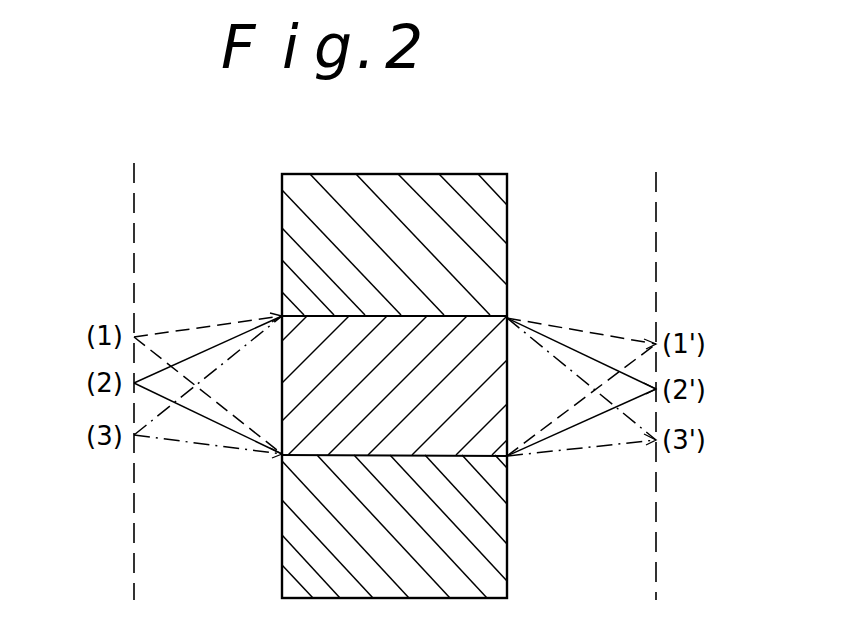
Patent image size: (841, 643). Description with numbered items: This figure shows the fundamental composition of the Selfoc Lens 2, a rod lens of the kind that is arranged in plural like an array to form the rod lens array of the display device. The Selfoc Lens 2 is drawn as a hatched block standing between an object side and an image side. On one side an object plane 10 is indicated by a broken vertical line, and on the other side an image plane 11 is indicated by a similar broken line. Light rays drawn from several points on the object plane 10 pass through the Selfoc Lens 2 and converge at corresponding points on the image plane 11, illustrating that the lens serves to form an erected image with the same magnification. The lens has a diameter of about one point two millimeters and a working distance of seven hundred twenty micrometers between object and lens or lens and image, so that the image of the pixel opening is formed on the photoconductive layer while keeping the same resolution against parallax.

The Selfoc Lens 2 is at (388, 172).
The object plane 10 is at (133, 163).
The image plane 11 is at (656, 181).